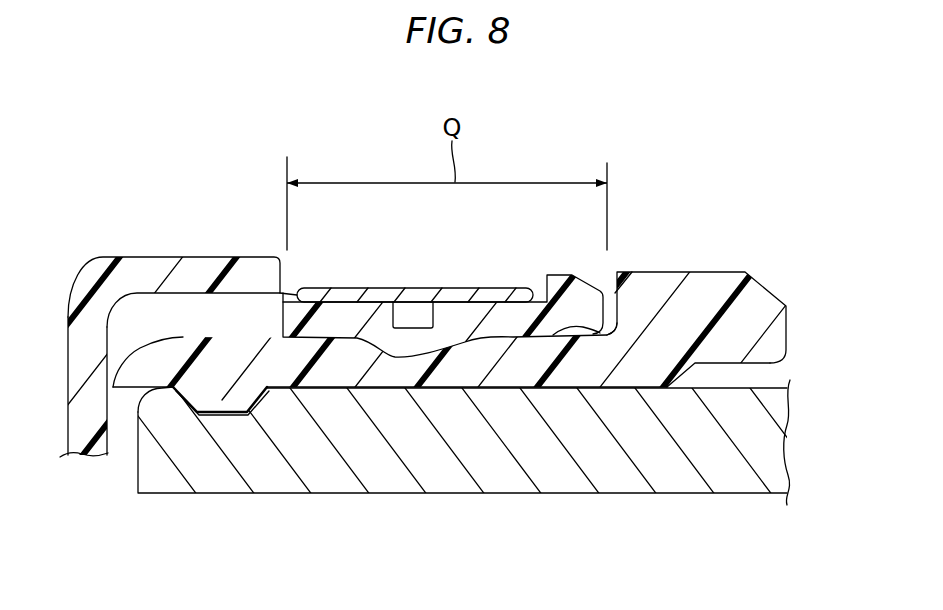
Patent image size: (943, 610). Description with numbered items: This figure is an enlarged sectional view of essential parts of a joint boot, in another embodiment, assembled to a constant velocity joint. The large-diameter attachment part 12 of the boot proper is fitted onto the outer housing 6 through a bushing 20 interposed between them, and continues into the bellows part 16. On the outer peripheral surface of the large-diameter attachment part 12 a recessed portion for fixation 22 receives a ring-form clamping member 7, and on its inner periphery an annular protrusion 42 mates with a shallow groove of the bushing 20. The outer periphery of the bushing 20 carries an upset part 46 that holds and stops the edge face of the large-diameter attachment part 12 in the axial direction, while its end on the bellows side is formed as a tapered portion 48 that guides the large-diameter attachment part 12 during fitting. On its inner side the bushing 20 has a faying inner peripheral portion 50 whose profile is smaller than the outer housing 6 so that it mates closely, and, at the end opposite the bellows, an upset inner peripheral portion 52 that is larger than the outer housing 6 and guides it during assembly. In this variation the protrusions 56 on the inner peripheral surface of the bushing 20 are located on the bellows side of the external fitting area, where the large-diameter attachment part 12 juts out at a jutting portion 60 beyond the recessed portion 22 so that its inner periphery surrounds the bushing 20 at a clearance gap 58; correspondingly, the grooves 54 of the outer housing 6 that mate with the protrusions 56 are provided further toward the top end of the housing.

The outer housing 6 is at (768, 387).
The ring-form clamping member 7 is at (460, 287).
The large-diameter attachment part 12 is at (262, 268).
The bellows part 16 is at (65, 422).
The bushing 20 is at (758, 266).
The recessed portion for fixation 22 is at (513, 298).
The annular protrusion 42 is at (395, 345).
The upset part 46 is at (675, 280).
The tapered portion 48 is at (140, 347).
The faying inner peripheral portion 50 is at (503, 388).
The upset inner peripheral portion 52 is at (737, 364).
The grooves 54 is at (183, 410).
The protrusions 56 is at (227, 404).
The clearance gap 58 is at (158, 318).
The jutting portion 60 is at (198, 270).